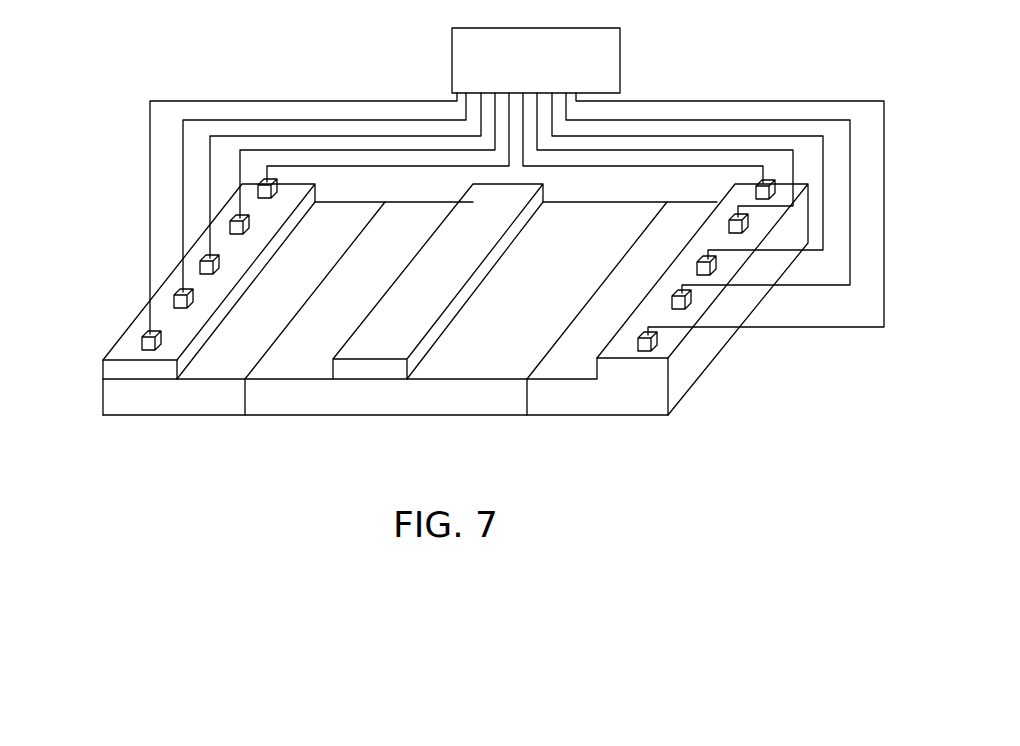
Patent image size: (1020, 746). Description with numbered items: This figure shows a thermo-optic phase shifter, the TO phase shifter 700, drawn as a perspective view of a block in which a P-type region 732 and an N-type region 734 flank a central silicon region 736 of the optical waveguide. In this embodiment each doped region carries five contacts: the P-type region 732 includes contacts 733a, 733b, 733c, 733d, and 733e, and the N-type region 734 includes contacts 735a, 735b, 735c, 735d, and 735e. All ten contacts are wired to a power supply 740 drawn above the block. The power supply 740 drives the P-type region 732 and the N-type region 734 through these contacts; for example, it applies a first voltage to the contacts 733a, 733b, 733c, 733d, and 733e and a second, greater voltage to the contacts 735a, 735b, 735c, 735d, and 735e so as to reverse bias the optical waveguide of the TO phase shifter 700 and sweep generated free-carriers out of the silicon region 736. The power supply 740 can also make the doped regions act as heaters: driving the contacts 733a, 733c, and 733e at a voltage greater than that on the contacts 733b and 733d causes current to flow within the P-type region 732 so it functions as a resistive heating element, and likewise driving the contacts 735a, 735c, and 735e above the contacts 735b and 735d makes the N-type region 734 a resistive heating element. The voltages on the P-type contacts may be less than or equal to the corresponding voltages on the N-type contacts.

The TO phase shifter 700 is at (448, 241).
The power supply 740 is at (558, 74).
The P-type region 732 is at (125, 402).
The silicon region 736 is at (372, 402).
The N-type region 734 is at (645, 402).
The contact 733a is at (142, 343).
The contact 733b is at (174, 300).
The contact 733c is at (200, 266).
The contact 733d is at (230, 227).
The contact 733e is at (258, 192).
The contact 735a is at (657, 341).
The contact 735b is at (691, 302).
The contact 735c is at (716, 267).
The contact 735d is at (729, 223).
The contact 735e is at (756, 192).